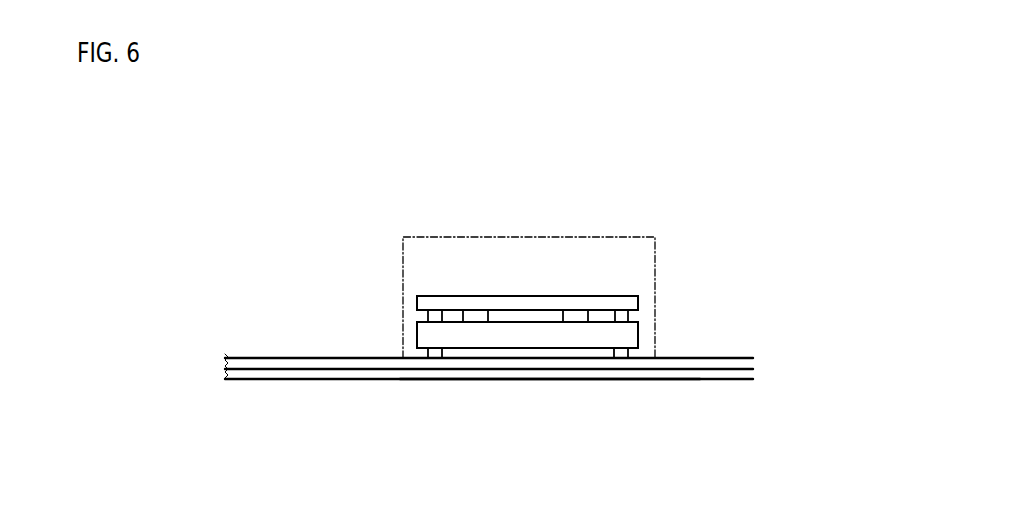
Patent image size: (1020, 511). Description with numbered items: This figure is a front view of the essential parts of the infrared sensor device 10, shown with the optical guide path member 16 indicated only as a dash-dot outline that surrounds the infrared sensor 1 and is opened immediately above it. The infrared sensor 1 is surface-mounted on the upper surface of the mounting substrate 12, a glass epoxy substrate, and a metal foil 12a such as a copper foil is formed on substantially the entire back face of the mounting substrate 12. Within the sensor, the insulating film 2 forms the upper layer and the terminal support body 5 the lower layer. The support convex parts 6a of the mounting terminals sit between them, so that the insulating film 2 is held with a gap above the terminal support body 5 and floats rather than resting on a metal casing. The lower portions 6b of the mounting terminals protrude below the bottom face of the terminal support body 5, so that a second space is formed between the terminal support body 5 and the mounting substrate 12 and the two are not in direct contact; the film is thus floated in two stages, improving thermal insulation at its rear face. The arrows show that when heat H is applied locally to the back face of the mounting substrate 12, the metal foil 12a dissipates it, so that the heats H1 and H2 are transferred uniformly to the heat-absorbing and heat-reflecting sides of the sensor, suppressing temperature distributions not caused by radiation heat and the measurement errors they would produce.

The infrared sensor device 10 is at (712, 210).
The optical guide path member 16 is at (656, 283).
The infrared sensor 1 is at (575, 296).
The insulating film 2 is at (447, 296).
The terminal support body 5 is at (525, 348).
The support convex parts 6a is at (422, 315).
The lower portions 6b is at (431, 358).
The mounting substrate 12 is at (728, 358).
The metal foil 12a is at (702, 381).
The heat H is at (332, 381).
The heat H1 is at (394, 306).
The heat H2 is at (663, 306).